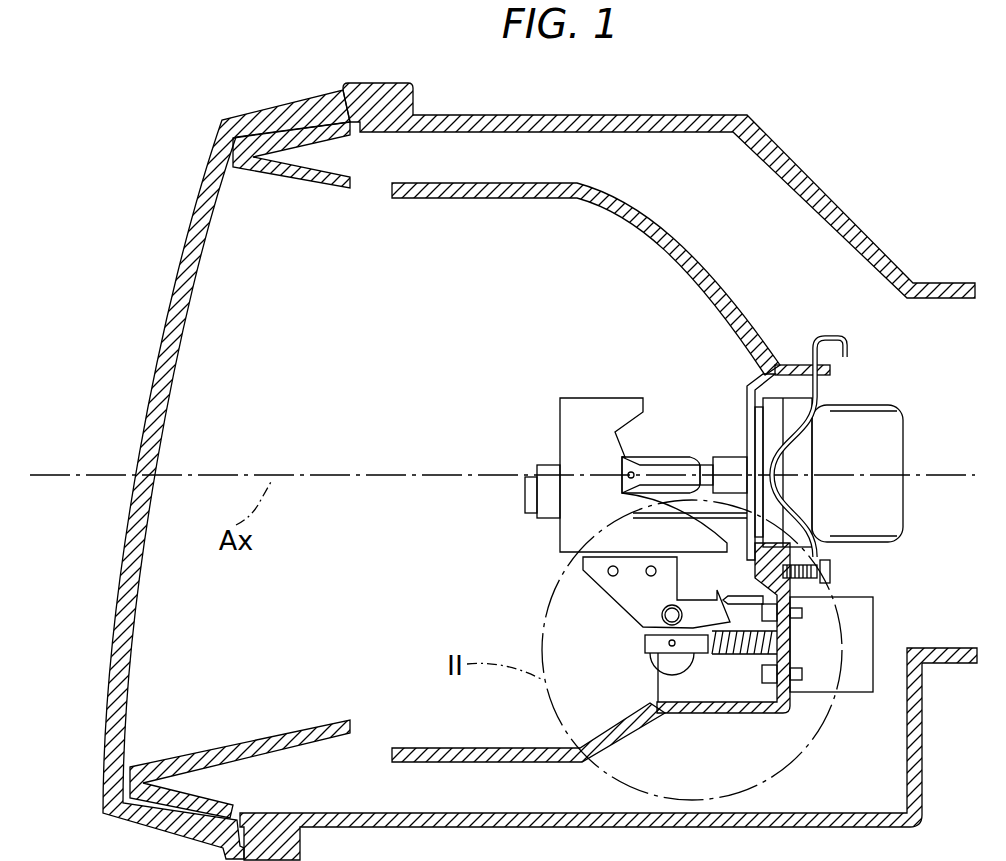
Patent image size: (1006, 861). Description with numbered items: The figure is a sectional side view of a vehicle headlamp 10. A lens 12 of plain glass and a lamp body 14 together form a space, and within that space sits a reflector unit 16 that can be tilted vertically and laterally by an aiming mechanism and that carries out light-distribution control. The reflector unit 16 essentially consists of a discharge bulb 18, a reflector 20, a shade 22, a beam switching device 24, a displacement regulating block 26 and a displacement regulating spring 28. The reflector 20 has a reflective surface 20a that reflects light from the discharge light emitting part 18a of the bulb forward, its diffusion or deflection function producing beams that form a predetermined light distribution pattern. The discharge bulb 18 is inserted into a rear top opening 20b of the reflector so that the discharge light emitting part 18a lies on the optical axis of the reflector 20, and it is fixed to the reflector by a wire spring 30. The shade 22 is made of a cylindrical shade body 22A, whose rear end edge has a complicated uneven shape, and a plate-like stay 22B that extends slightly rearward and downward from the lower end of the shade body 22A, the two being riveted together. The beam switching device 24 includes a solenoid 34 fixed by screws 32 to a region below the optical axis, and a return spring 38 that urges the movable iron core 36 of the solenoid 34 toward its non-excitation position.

The vehicle headlamp 10 is at (518, 471).
The lens 12 is at (170, 297).
The lamp body 14 is at (821, 190).
The reflector unit 16 is at (534, 490).
The discharge bulb 18 is at (684, 423).
The discharge light emitting part 18a is at (633, 470).
The reflector 20 is at (516, 470).
The reflective surface 20a is at (708, 284).
The rear top opening 20b is at (773, 413).
The shade 22 is at (604, 497).
The shade body 22A is at (572, 442).
The stay 22B is at (612, 600).
The beam switching device 24 is at (786, 652).
The displacement regulating block 26 is at (668, 593).
The displacement regulating spring 28 is at (745, 655).
The wire spring 30 is at (850, 350).
The screws 32 is at (793, 680).
The solenoid 34 is at (830, 688).
The movable iron core 36 is at (660, 648).
The return spring 38 is at (750, 607).